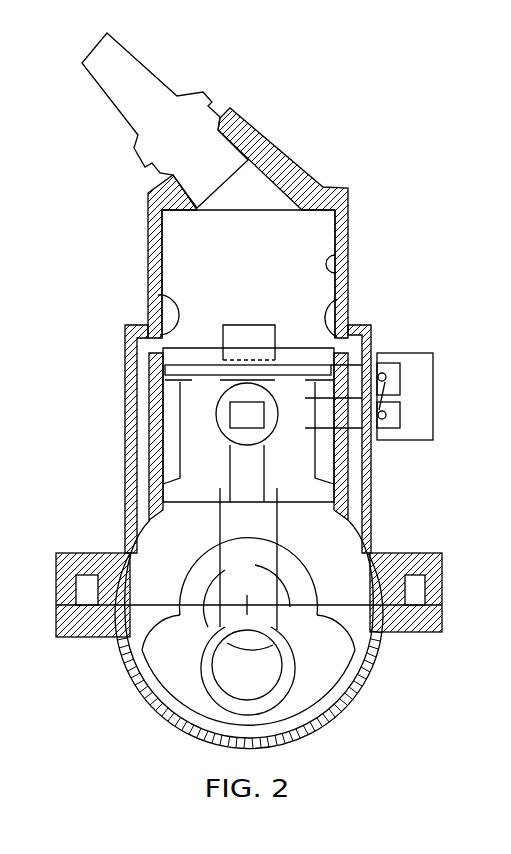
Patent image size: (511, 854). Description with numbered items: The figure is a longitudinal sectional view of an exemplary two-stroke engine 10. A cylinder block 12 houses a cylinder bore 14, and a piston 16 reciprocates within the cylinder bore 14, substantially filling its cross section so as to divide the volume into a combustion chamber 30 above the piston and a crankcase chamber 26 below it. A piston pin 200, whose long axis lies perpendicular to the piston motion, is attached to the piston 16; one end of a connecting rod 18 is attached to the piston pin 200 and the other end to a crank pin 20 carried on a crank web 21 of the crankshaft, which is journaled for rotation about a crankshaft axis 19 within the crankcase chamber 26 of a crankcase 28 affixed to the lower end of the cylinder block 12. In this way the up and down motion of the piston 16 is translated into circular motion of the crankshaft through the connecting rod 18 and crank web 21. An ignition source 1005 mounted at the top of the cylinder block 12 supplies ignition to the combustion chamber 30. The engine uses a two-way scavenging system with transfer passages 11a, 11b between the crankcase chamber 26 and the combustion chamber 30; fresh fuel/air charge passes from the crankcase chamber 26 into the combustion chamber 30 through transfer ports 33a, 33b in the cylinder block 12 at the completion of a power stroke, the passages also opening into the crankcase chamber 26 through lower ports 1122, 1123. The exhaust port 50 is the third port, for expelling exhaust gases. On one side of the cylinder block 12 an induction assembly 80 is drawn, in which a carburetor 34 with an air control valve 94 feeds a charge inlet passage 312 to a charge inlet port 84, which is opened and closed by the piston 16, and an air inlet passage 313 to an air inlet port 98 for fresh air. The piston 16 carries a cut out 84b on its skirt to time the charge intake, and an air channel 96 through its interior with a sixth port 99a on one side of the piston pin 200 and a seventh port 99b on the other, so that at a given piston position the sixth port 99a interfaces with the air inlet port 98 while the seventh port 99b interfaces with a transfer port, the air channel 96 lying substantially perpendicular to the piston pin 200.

The ignition source 1005 is at (138, 77).
The two stroke engine 10 is at (140, 233).
The cylinder block 12 is at (343, 237).
The cylinder bore 14 is at (347, 290).
The combustion chamber 30 is at (237, 248).
The exhaust port 50 is at (232, 330).
The transfer port 33b is at (160, 293).
The transfer port 33a is at (330, 318).
The transfer passage 11b is at (137, 452).
The transfer passage 11a is at (355, 493).
The piston 16 is at (183, 358).
The air channel 96 is at (193, 403).
The charge inlet port 84 is at (182, 460).
The seventh port 99b is at (177, 417).
The sixth port 99a is at (243, 417).
The piston pin 200 is at (228, 428).
The cut out 84b is at (238, 462).
The carburetor 34 is at (420, 402).
The sensor 80 is at (377, 432).
The air inlet passage 313 is at (377, 368).
The charge inlet passage 312 is at (375, 432).
The air inlet port 98 is at (375, 378).
The air control valve 94 is at (387, 387).
The fifth port 1122 is at (128, 562).
The ninth port 1123 is at (407, 567).
The crankcase chamber 26 is at (362, 636).
The crankshaft axis 19 is at (128, 625).
The crankcase 28 is at (367, 663).
The connecting rod 18 is at (278, 532).
The crank web 21 is at (267, 680).
The crank pin 20 is at (335, 683).